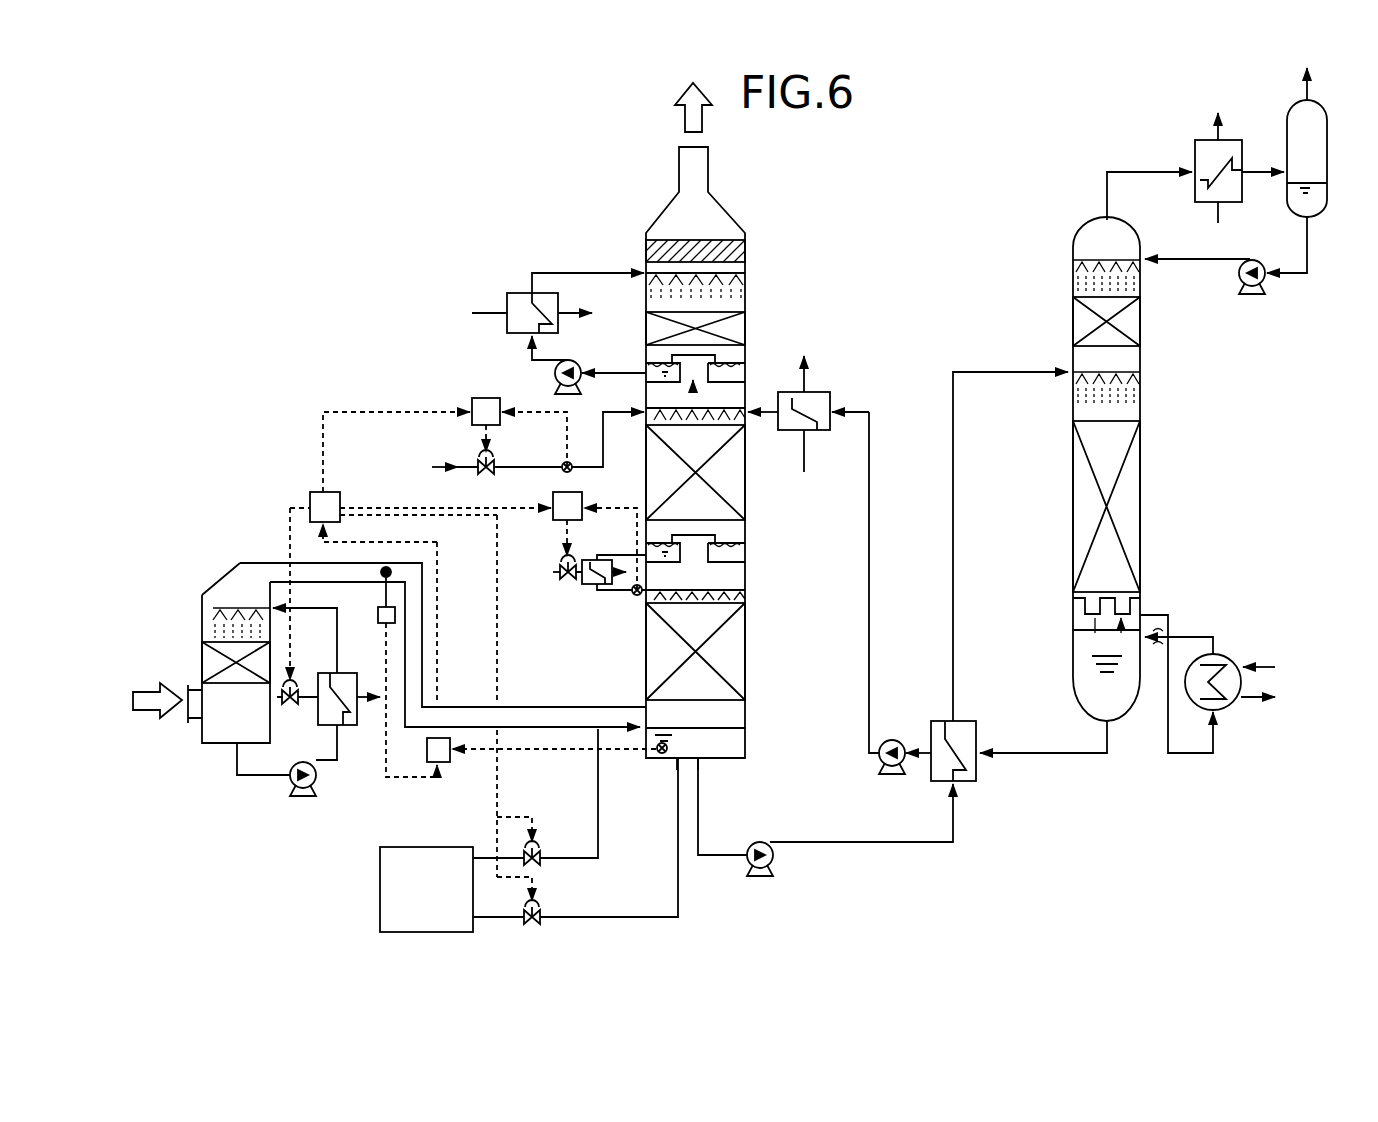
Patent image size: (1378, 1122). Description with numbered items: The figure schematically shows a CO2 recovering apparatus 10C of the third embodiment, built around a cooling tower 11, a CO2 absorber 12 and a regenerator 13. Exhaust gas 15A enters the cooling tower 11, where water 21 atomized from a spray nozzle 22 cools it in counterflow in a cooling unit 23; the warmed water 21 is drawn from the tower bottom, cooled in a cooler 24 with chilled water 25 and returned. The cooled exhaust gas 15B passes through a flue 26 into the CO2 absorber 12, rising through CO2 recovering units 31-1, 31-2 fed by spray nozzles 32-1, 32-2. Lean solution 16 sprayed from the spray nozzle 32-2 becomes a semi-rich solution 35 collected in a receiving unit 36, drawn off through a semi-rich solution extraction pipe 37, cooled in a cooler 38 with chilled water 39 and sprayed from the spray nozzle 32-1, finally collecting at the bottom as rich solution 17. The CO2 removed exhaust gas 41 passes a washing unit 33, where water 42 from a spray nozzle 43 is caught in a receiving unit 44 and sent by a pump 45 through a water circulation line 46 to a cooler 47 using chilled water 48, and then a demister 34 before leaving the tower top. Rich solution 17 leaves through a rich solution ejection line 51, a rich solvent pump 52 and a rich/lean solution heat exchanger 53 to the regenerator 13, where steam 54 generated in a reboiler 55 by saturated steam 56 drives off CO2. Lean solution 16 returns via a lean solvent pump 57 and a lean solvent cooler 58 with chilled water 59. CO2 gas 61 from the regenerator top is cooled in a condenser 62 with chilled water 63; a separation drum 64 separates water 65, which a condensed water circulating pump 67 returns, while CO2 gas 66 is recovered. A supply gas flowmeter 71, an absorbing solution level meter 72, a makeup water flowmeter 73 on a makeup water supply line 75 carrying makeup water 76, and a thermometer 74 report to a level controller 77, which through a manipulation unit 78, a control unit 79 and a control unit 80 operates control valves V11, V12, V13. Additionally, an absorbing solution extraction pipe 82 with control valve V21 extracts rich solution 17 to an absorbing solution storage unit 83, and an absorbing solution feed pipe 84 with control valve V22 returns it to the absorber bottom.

The CO2 recovering apparatus 10C is at (576, 158).
The cooling tower 11 is at (214, 583).
The CO2 absorber 12 is at (642, 217).
The regenerator 13 is at (1068, 230).
The exhaust gas 15A is at (167, 720).
The cooled exhaust gas 15B is at (565, 717).
The CO2 absorbing solution (lean solution) 16 is at (772, 405).
The rich solution 17 is at (717, 755).
The water 21 is at (328, 612).
The spray nozzle 22 is at (243, 605).
The cooling unit 23 is at (206, 657).
The cooler 24 is at (352, 727).
The chilled water 25 is at (281, 703).
The flue 26 is at (266, 562).
The CO2 recovering unit 31-1 is at (738, 655).
The CO2 recovering unit 31-2 is at (738, 490).
The spray nozzle 32-1 is at (738, 595).
The spray nozzle 32-2 is at (735, 420).
The washing unit 33 is at (738, 322).
The demister 34 is at (740, 244).
The semi-rich solution 35 is at (738, 555).
The receiving unit 36 is at (738, 565).
The semi-rich solution extraction pipe 37 is at (603, 592).
The cooler 38 is at (589, 560).
The chilled water 39 is at (553, 578).
The CO2 removed exhaust gas 41 is at (690, 392).
The water 42 is at (558, 271).
The spray nozzle 43 is at (738, 280).
The receiving unit 44 is at (725, 385).
The pump 45 is at (556, 378).
The water circulation line 46 is at (608, 373).
The cooler 47 is at (500, 318).
The chilled water 48 is at (490, 311).
The rich solution ejection line 51 is at (710, 860).
The rich solvent pump 52 is at (774, 859).
The rich/lean solution heat exchanger 53 is at (976, 722).
The steam 54 is at (1088, 626).
The reboiler 55 is at (1227, 712).
The saturated steam 56 is at (1268, 667).
The lean solvent pump 57 is at (893, 740).
The lean solvent cooler 58 is at (829, 392).
The chilled water 59 is at (806, 450).
The CO2 gas 61 is at (1130, 172).
The condenser 62 is at (1199, 140).
The chilled water 63 is at (1220, 228).
The separation drum 64 is at (1329, 155).
The water 65 is at (1323, 205).
The CO2 gas 66 is at (1310, 88).
The condensed water circulating pump 67 is at (1240, 286).
The supply gas flowmeter 71 is at (383, 626).
The absorbing solution level meter 72 is at (661, 758).
The makeup water flowmeter 73 is at (570, 463).
The thermometer 74 is at (637, 597).
The makeup water supply line 75 is at (512, 470).
The makeup water 76 is at (433, 470).
The level controller 77 is at (452, 758).
The manipulation unit 78 is at (312, 492).
The control unit 79 is at (582, 496).
The control unit 80 is at (473, 426).
The absorbing solution extraction pipe 82 is at (633, 916).
The absorbing solution storage unit 83 is at (433, 847).
The absorbing solution feed pipe 84 is at (598, 822).
The control valve V11 is at (294, 684).
The control valve V12 is at (562, 557).
The control valve V13 is at (492, 457).
The control valve V21 is at (539, 910).
The control valve V22 is at (539, 850).